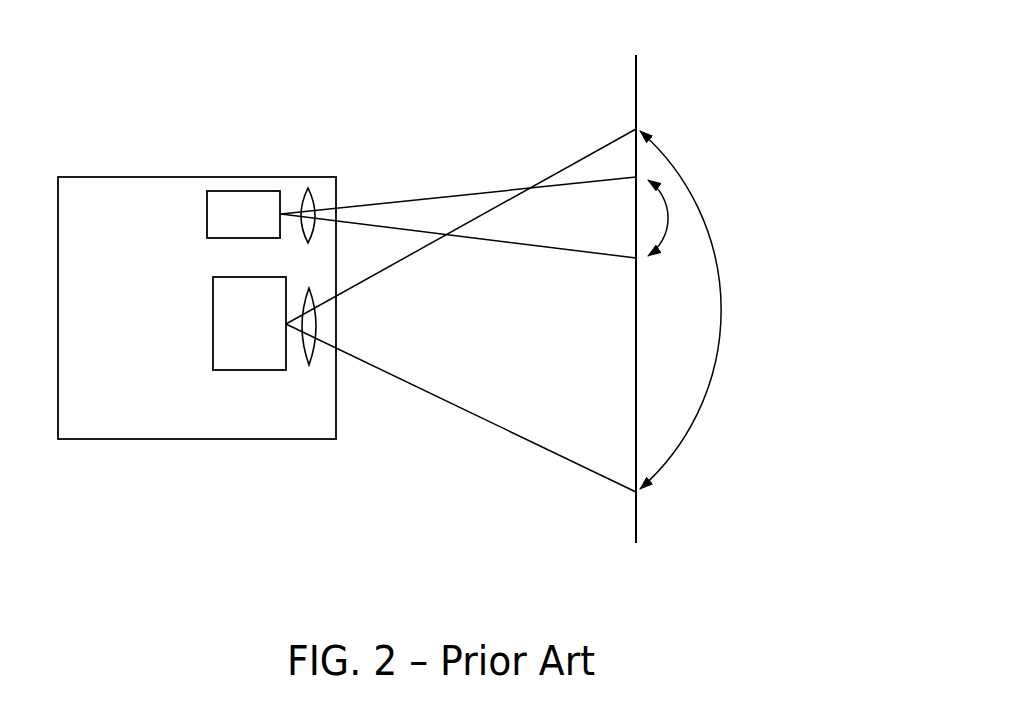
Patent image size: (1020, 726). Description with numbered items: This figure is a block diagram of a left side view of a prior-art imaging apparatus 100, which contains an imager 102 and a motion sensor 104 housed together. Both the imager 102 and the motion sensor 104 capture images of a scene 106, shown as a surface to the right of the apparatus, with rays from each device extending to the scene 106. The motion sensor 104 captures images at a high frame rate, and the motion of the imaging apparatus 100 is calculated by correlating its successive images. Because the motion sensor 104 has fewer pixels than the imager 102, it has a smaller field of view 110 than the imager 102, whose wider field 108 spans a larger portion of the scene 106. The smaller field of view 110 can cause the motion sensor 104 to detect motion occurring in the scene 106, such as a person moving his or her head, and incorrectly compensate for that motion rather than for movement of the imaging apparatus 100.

The imaging apparatus 100 is at (137, 312).
The imager 102 is at (249, 371).
The motion sensor 104 is at (243, 212).
The scene 106 is at (638, 77).
The projection field 108 is at (726, 320).
The field of view 110 is at (673, 230).